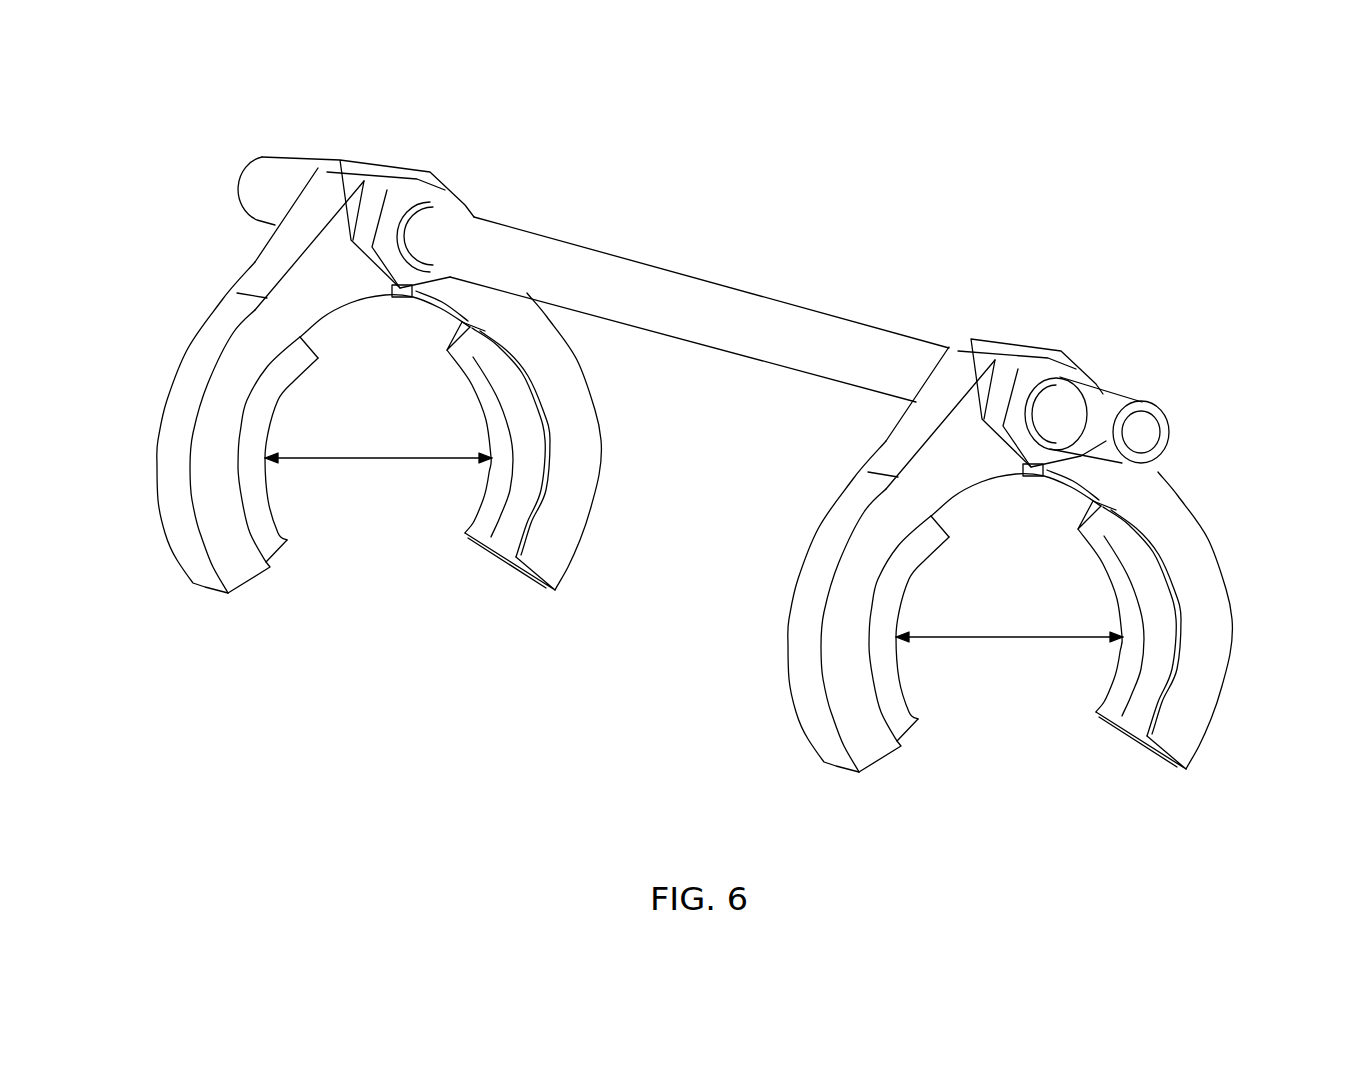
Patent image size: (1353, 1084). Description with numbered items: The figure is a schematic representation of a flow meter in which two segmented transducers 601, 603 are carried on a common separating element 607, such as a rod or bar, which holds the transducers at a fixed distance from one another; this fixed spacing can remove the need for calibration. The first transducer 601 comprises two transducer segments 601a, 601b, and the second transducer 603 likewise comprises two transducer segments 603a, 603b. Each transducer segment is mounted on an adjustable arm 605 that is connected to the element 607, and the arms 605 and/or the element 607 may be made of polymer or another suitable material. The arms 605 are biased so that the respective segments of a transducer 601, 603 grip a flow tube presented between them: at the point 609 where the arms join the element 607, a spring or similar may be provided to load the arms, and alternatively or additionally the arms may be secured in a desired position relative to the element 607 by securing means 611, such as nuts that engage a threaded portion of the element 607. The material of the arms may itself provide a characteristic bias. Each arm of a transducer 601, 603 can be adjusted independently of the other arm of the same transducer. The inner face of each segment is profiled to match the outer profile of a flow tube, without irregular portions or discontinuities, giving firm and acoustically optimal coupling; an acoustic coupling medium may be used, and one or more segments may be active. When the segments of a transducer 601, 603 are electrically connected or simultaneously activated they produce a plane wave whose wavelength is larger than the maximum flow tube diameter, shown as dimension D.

The segmented transducer 601 is at (356, 477).
The transducer segment 601a is at (270, 433).
The transducer segment 601b is at (480, 392).
The segmented transducer 603 is at (987, 647).
The transducer segment 603a is at (903, 612).
The transducer segment 603b is at (1113, 573).
The adjustable arm 605 is at (210, 312).
The separating element 607 is at (784, 300).
The point where the arms join the element 609 is at (719, 281).
The securing means 611 is at (352, 155).